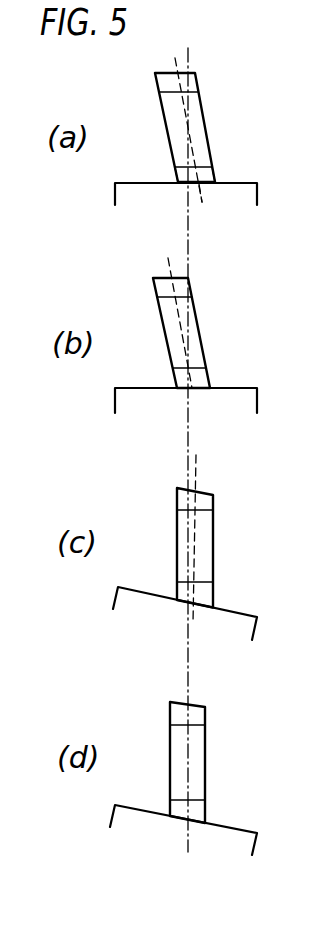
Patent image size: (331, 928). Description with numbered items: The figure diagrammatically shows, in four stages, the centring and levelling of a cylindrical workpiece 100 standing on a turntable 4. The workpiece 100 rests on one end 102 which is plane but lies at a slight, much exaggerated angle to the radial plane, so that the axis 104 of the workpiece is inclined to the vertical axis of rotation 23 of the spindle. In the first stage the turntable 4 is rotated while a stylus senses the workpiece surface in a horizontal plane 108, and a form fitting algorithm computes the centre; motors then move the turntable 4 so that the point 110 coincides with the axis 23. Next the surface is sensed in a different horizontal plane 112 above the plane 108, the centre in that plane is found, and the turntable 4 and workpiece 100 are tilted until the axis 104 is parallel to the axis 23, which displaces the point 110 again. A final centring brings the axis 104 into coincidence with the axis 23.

The turntable 4 is at (115, 190).
The vertical axis of rotation 23 is at (190, 68).
The cylindrical workpiece 100 is at (162, 115).
The end 102 is at (203, 187).
The axis 104 is at (173, 59).
The horizontal plane 108 is at (203, 166).
The point 110 is at (193, 166).
The horizontal plane 112 is at (155, 297).